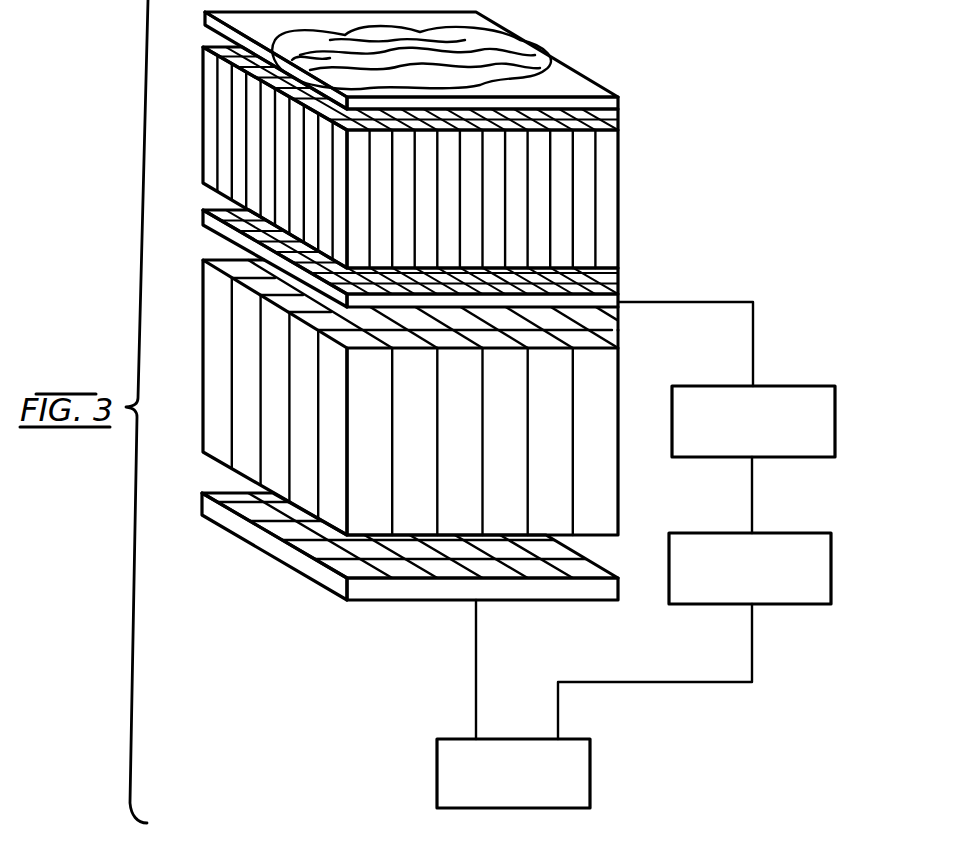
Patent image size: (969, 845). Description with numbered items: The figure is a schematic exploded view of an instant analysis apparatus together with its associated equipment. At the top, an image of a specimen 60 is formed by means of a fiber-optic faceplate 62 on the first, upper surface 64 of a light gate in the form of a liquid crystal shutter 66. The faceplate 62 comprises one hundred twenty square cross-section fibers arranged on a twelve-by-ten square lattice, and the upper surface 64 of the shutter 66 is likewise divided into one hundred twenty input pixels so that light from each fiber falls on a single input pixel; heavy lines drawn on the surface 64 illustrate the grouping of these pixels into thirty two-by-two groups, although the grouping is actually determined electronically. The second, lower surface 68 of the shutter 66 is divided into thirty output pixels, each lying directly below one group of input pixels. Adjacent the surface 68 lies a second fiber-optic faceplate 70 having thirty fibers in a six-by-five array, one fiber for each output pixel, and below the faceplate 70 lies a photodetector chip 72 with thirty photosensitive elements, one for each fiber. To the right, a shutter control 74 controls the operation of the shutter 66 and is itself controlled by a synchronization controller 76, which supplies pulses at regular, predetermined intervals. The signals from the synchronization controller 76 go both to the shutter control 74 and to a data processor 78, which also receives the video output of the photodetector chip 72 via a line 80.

The specimen 60 is at (580, 88).
The fiber-optic faceplate 62 is at (618, 192).
The first, upper surface 64 is at (598, 293).
The liquid crystal shutter 66 is at (605, 301).
The second, lower surface 68 is at (602, 310).
The second fiber-optic faceplate 70 is at (601, 376).
The photodetector chip 72 is at (570, 590).
The shutter control 74 is at (775, 386).
The synchronization controller 76 is at (778, 533).
The data processor 78 is at (580, 739).
The line 80 is at (476, 666).